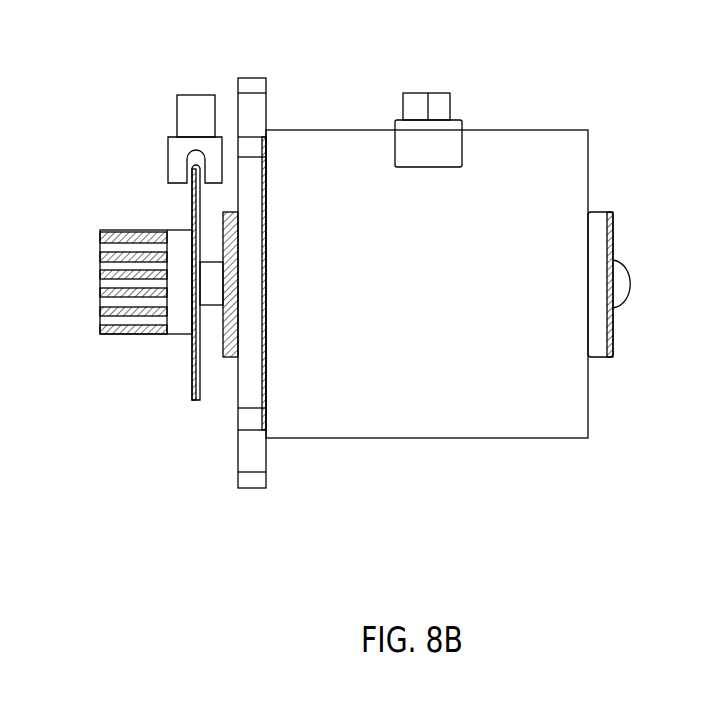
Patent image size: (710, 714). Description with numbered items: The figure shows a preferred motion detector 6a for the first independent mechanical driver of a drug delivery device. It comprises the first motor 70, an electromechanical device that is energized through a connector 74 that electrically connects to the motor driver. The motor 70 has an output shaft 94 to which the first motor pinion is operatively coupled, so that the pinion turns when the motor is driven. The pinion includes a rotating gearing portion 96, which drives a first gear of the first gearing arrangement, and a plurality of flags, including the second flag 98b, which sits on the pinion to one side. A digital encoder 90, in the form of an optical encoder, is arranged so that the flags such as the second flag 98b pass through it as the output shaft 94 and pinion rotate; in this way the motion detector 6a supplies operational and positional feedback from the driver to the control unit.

The first motion detector 6a is at (582, 93).
The first motor 70 is at (496, 129).
The connector 74 is at (396, 120).
The digital encoder 90 is at (168, 158).
The output shaft 94 is at (210, 283).
The rotating gearing portion 96 is at (118, 231).
The second flag 98b is at (192, 377).